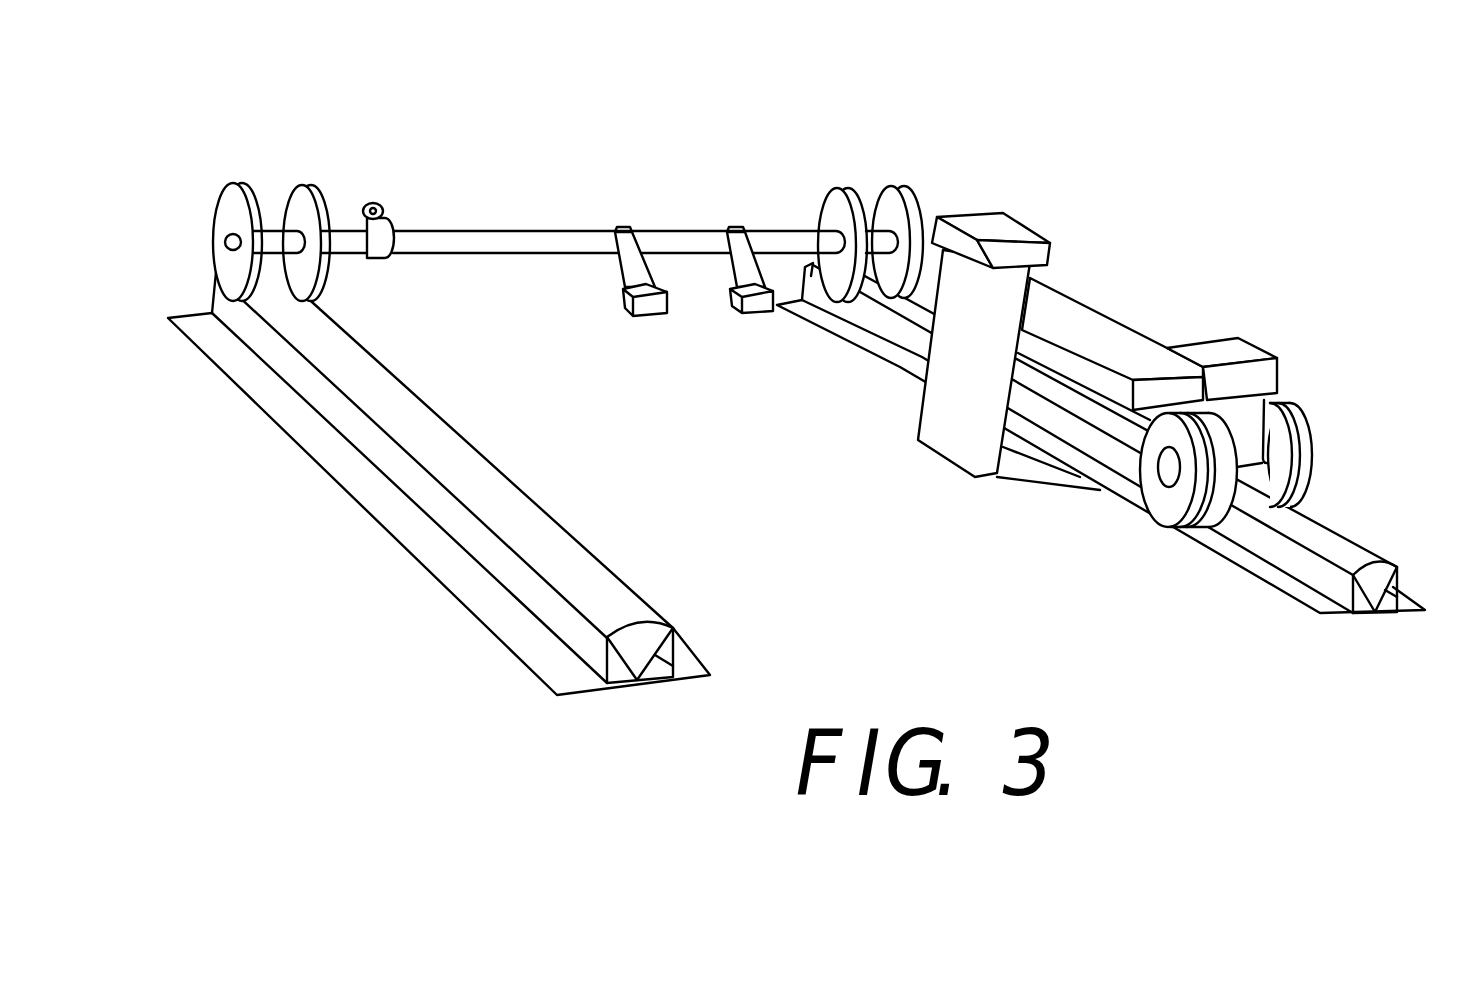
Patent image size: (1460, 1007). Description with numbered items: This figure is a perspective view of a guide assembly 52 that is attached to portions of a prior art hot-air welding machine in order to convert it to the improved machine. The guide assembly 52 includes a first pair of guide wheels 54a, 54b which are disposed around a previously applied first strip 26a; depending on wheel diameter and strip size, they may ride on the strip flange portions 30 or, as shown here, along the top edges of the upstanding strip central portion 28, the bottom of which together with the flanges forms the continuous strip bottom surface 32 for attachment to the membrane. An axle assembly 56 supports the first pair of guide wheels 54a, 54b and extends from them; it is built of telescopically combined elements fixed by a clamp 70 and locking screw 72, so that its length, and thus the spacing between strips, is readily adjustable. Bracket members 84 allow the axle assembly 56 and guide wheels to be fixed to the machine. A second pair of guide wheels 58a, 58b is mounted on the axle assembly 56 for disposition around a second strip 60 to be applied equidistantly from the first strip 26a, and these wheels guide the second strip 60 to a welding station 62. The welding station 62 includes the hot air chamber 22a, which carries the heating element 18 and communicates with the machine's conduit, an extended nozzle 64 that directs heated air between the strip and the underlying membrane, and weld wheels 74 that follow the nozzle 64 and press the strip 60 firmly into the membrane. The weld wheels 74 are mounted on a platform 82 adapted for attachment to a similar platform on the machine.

The heating element 18 is at (1052, 243).
The chamber 22a is at (939, 314).
The first strip 26a is at (487, 505).
The central portion 28 is at (629, 452).
The flange portions 30 is at (465, 501).
The strip bottom surface 32 is at (687, 677).
The guide assembly 52 is at (543, 210).
The first guide wheel 54a is at (228, 185).
The first guide wheel 54b is at (304, 185).
The axle assembly 56 is at (697, 230).
The second guide wheel 58a is at (845, 188).
The second guide wheel 58b is at (897, 190).
The second strip 60 is at (1345, 535).
The welding station 62 is at (1089, 362).
The extended nozzle 64 is at (1028, 482).
The clamp 70 is at (421, 232).
The locking screw 72 is at (378, 206).
The weld wheels 74 is at (1308, 440).
The platform 82 is at (1213, 355).
The bracket members 84 is at (730, 303).